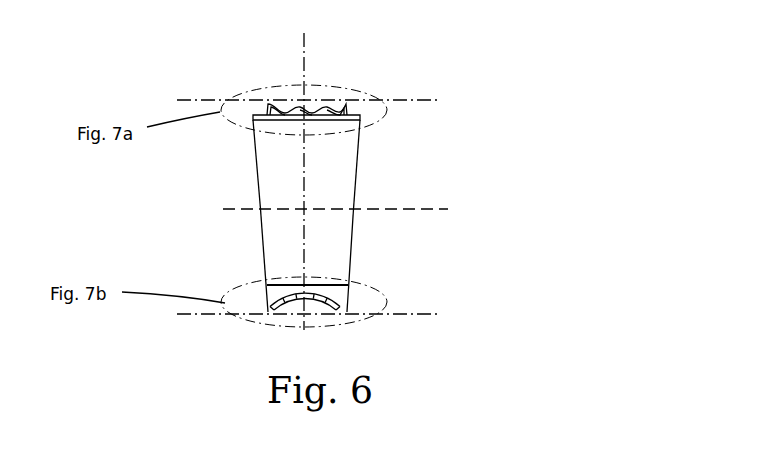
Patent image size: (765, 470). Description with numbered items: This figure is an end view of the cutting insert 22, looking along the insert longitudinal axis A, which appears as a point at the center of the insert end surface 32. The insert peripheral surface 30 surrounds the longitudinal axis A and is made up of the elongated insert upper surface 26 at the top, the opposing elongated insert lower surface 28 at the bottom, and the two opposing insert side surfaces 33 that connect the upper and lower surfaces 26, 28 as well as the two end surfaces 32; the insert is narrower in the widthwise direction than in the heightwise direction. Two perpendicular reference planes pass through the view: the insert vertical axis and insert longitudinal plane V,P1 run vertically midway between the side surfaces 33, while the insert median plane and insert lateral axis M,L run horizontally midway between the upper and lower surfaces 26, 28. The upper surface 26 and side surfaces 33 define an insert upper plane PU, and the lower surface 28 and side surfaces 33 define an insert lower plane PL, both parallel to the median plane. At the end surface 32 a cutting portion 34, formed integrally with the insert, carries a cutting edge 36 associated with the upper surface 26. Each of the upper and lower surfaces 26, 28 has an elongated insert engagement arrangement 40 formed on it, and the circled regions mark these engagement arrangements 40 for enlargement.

The cutting insert 22 is at (366, 210).
The insert upper surface 26 is at (241, 87).
The insert lower surface 28 is at (348, 333).
The insert peripheral surface 30 is at (364, 156).
The insert end surface 32 is at (293, 173).
The insert side surface 33 is at (260, 240).
The cutting portion 34 is at (216, 141).
The cutting edge 36 is at (349, 114).
The insert engagement arrangement 40 is at (271, 54).
The insert longitudinal axis A is at (304, 212).
The insert upper plane PU is at (393, 100).
The insert lower plane PL is at (430, 316).
The insert median plane and insert lateral axis M,L is at (423, 208).
The insert vertical axis and insert longitudinal plane V,P1 is at (305, 50).